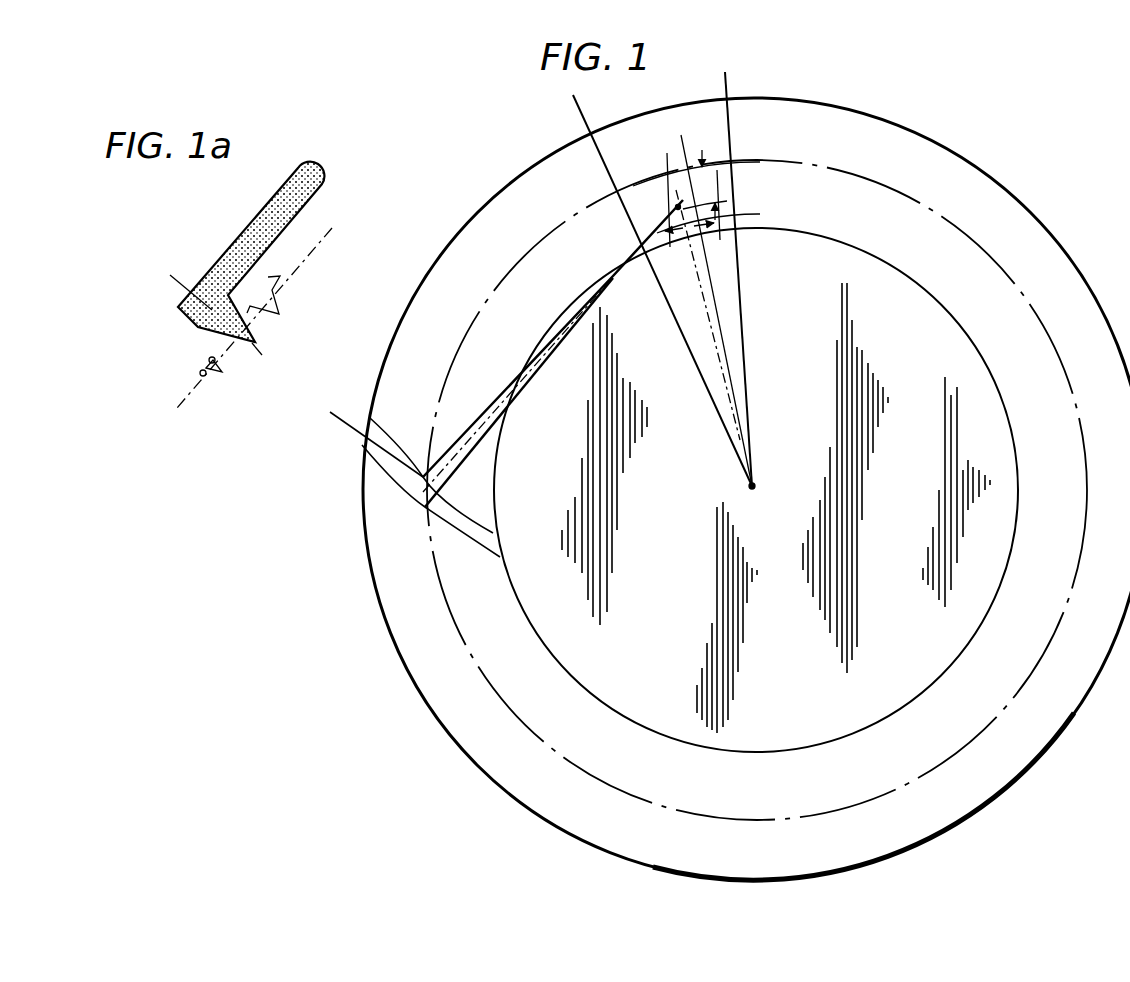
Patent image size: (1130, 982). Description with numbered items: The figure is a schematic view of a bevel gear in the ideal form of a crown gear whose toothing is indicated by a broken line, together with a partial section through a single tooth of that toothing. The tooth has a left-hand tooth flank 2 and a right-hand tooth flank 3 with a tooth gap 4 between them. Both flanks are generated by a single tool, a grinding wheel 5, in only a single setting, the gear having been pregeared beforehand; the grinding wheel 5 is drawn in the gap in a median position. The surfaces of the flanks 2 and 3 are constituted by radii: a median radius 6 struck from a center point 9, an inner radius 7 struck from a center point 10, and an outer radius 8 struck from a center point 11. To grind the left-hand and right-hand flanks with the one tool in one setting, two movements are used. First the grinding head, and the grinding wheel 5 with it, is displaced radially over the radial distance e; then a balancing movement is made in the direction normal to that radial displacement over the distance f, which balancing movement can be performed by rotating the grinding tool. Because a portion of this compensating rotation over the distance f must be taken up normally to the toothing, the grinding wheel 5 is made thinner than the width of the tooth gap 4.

In FIG. 1, the left-hand tooth flank 2 is at (458, 533).
In FIG. 1a, the left-hand tooth flank 2 is at (212, 388).
In FIG. 1, the right-hand tooth flank 3 is at (402, 450).
In FIG. 1a, the right-hand tooth flank 3 is at (225, 372).
In FIG. 1, the tooth gap 4 is at (373, 437).
In FIG. 1a, the tooth gap 4 is at (200, 366).
In FIG. 1a, the grinding wheel 5 is at (247, 243).
In FIG. 1, the median radius 6 is at (476, 436).
In FIG. 1, the inner radius 7 is at (487, 410).
In FIG. 1, the outer radius 8 is at (465, 458).
In FIG. 1, the center point 9 is at (678, 207).
In FIG. 1, the center point 10 is at (669, 245).
In FIG. 1, the center point 11 is at (690, 128).
In FIG. 1, the radial distance e is at (707, 185).
In FIG. 1, the distance f is at (696, 236).